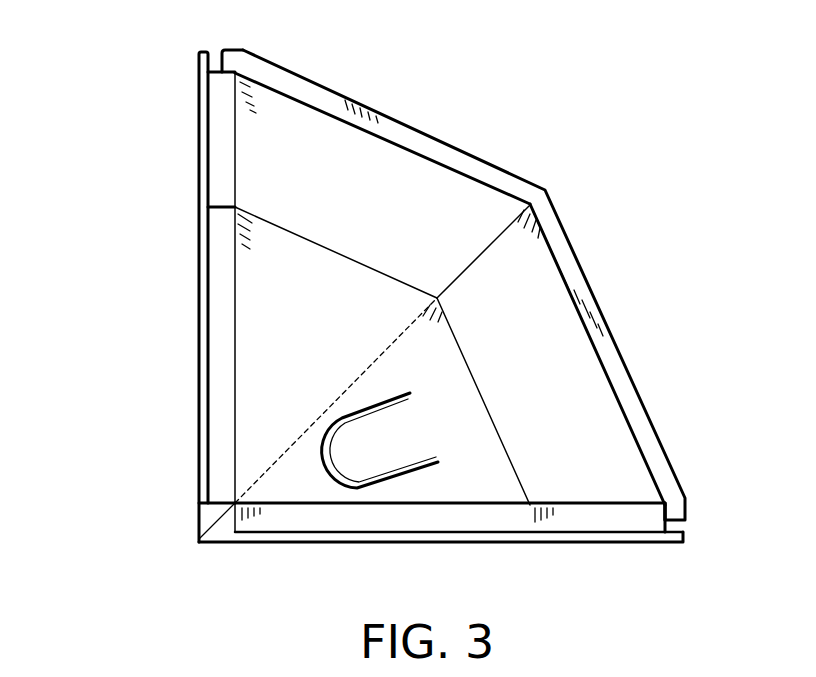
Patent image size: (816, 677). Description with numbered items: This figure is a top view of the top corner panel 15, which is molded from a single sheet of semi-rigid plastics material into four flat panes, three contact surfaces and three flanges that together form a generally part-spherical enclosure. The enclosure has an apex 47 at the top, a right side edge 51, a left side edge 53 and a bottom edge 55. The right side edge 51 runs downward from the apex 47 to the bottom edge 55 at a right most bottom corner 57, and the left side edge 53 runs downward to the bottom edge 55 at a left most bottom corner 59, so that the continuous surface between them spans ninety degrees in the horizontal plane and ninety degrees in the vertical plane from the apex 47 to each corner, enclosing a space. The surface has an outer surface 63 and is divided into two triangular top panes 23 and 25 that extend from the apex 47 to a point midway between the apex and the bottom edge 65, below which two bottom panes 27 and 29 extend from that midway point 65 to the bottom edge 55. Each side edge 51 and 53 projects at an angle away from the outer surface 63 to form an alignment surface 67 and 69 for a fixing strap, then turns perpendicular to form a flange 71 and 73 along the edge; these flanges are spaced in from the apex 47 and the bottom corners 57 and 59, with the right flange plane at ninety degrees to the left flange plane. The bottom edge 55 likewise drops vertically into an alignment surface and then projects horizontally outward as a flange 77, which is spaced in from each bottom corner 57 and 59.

The top corner panel 15 is at (138, 307).
The triangular top pane 23 is at (260, 285).
The triangular top pane 25 is at (492, 490).
The bottom pane 27 is at (464, 281).
The bottom pane 29 is at (610, 460).
The apex 47 is at (205, 528).
The right side edge 51 is at (197, 100).
The left side edge 53 is at (608, 545).
The bottom edge 55 is at (625, 362).
The right most bottom corner 57 is at (236, 71).
The left most bottom corner 59 is at (685, 520).
The outer surface 63 is at (462, 193).
The point midway between the apex and the bottom edge 65 is at (255, 212).
The alignment surface 67 is at (218, 357).
The alignment surface 69 is at (440, 522).
The flange 71 is at (200, 415).
The flange 73 is at (340, 537).
The flange 77 is at (565, 250).